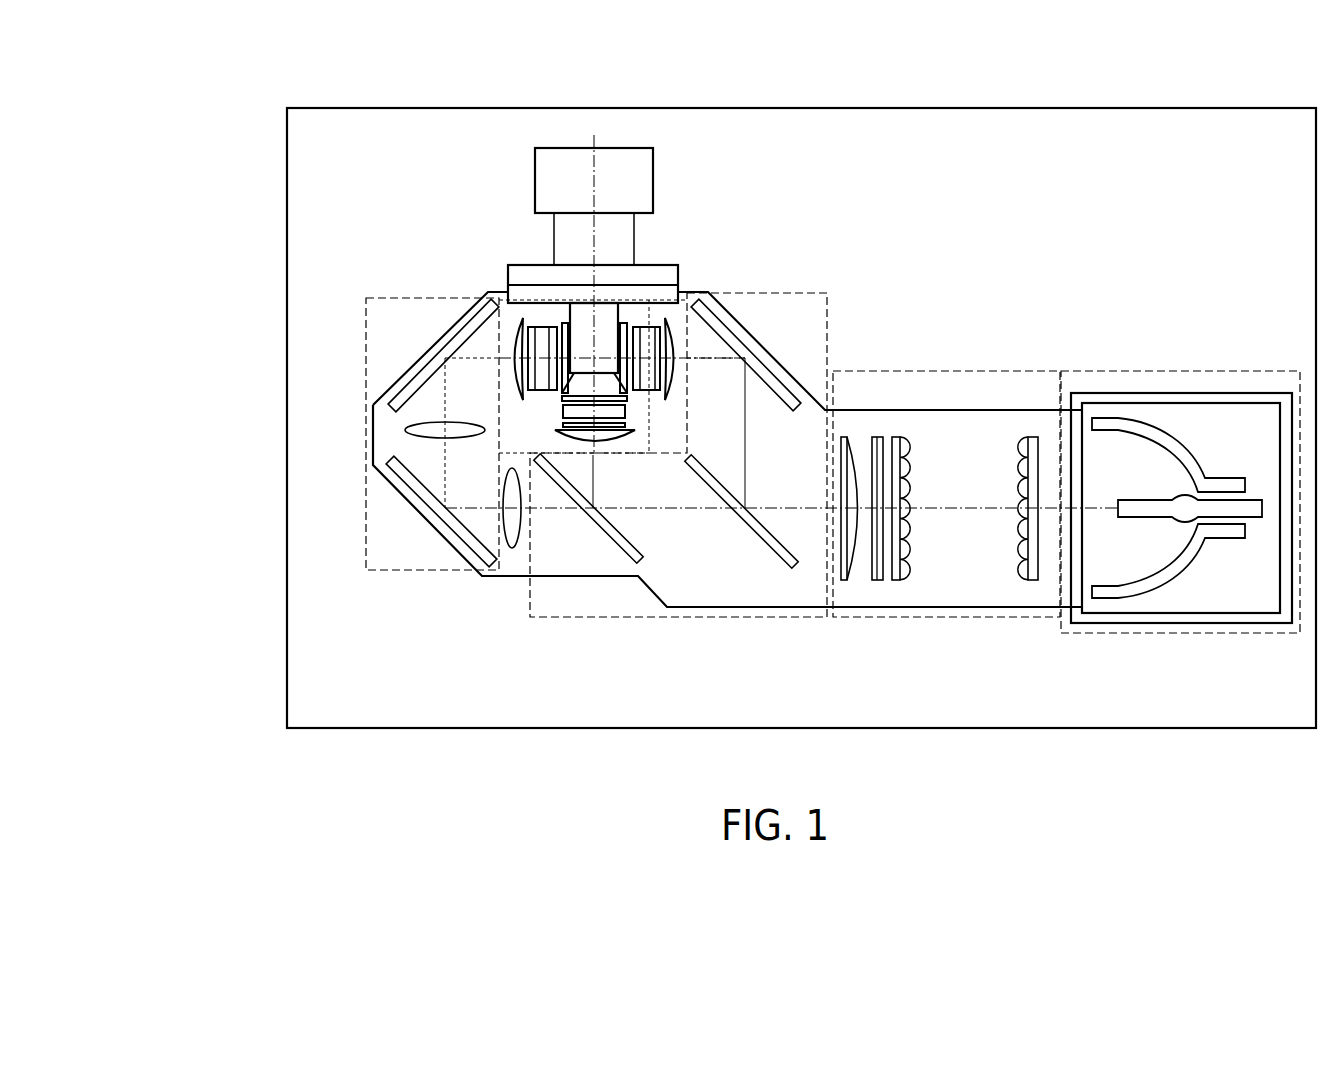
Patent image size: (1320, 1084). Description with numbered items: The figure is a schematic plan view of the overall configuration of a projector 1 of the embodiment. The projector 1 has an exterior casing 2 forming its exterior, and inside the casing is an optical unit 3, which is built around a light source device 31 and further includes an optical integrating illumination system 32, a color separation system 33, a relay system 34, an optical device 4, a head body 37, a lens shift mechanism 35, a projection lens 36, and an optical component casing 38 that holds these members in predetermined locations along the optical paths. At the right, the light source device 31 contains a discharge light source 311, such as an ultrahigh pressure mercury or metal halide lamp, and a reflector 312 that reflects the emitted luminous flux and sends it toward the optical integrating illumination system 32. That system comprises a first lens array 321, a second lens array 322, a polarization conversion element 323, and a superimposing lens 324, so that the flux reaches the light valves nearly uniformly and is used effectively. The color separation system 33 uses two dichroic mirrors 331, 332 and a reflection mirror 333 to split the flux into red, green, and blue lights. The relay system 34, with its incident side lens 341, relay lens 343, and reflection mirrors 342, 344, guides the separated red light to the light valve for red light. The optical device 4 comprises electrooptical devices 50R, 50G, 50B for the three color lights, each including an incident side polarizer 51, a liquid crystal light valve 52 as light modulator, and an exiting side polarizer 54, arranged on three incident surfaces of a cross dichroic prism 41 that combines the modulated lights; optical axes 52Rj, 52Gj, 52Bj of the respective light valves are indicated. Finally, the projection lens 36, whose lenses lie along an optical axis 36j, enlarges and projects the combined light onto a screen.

The projector 1 is at (864, 97).
The exterior casing 2 is at (287, 265).
The optical unit 3 is at (811, 186).
The optical device 4 is at (662, 420).
The light source device 31 is at (1080, 635).
The discharge light source 311 is at (1152, 512).
The reflector 312 is at (1188, 552).
The optical integrating illumination system 32 is at (873, 620).
The first lens array 321 is at (1033, 437).
The second lens array 322 is at (898, 437).
The polarization conversion element 323 is at (880, 437).
The superimposing lens 324 is at (853, 437).
The color separation system 33 is at (702, 620).
The dichroic mirror 331 is at (773, 547).
The dichroic mirror 332 is at (617, 546).
The reflection mirror 333 is at (760, 368).
The relay system 34 is at (366, 437).
The incident side lens 341 is at (511, 540).
The reflection mirror 342 is at (414, 485).
The relay lens 343 is at (457, 438).
The reflection mirror 344 is at (432, 375).
The lens shift mechanism 35 is at (612, 310).
The projection lens 36 is at (548, 187).
The optical axis 36j is at (594, 162).
The head body 37 is at (636, 300).
The optical component casing 38 is at (600, 578).
The cross dichroic prism 41 is at (565, 325).
The electrooptical device for R-light 50R is at (536, 398).
The electrooptical device for G-light 50G is at (650, 412).
The electrooptical device for B-light 50B is at (655, 400).
The incident side polarizer 51 is at (540, 330).
The liquid crystal light valve 52 is at (518, 320).
The optical axis 52Rj is at (478, 358).
The optical axis 52Gj is at (593, 483).
The optical axis 52Bj is at (712, 358).
The exiting side polarizer 54 is at (567, 393).